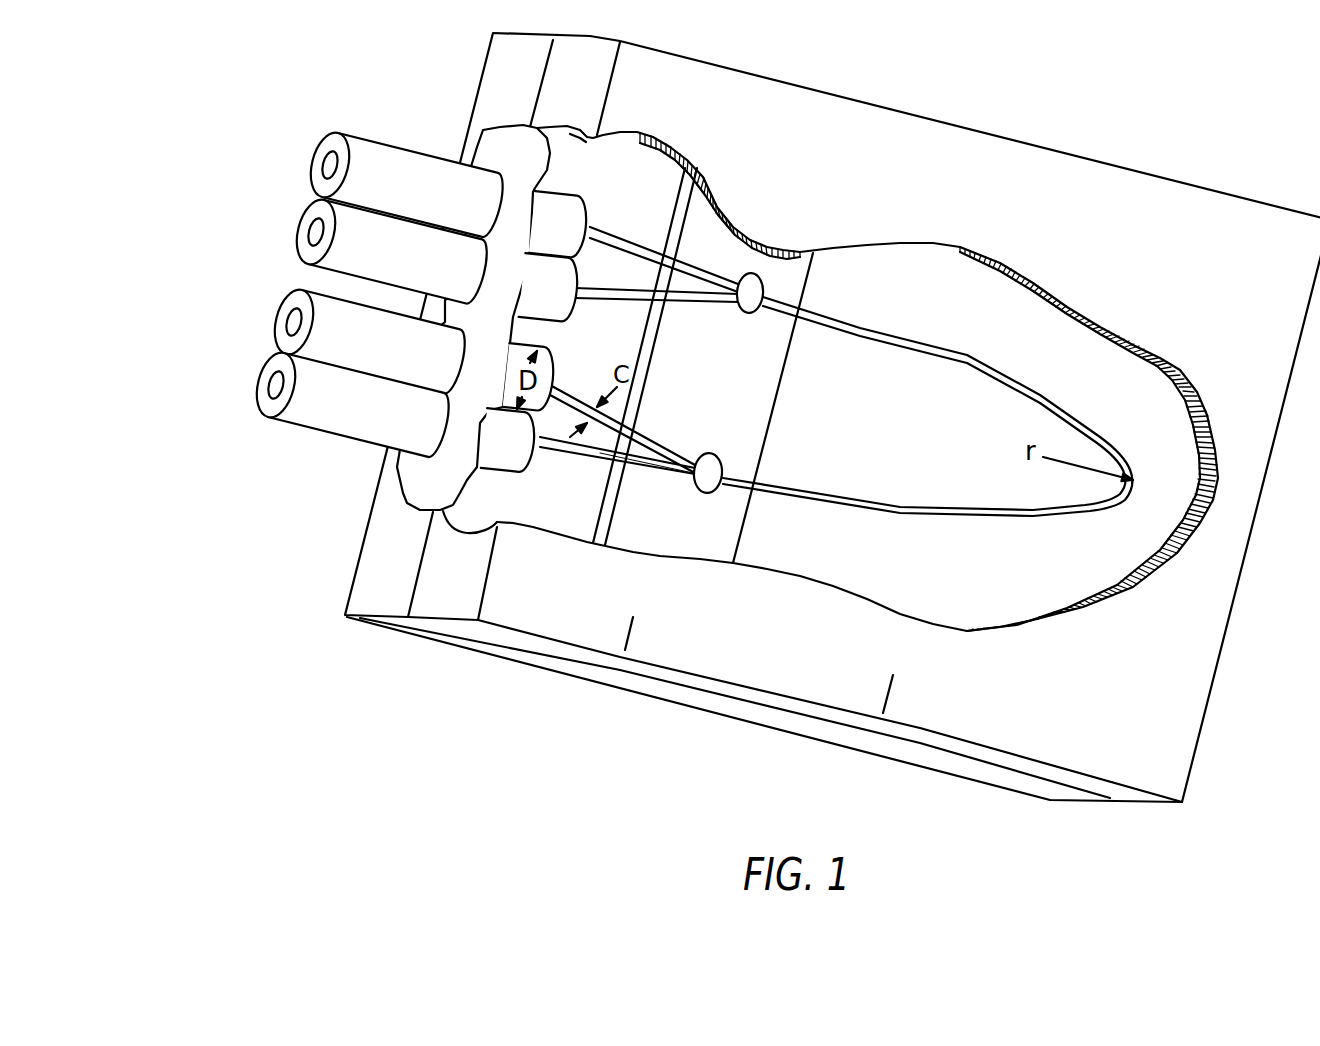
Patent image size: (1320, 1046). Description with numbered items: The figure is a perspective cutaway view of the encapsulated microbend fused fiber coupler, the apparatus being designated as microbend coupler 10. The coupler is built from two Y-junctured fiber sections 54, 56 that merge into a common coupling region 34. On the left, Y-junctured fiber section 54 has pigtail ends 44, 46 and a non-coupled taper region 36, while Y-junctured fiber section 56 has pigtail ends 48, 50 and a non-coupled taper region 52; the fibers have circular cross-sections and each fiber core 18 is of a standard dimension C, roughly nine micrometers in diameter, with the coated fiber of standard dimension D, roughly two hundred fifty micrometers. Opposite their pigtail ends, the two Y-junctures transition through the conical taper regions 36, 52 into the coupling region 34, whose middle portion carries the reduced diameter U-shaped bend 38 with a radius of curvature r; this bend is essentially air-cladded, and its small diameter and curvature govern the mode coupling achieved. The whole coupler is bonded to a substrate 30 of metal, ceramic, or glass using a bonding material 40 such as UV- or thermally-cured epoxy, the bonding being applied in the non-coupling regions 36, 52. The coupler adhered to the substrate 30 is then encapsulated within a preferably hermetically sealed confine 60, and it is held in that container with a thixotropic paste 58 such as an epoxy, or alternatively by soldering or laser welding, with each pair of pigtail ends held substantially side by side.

The microbend coupler 10 is at (1268, 165).
The fiber core 18 is at (313, 233).
The substrate 30 is at (767, 380).
The coupling region 34 is at (957, 363).
The non-coupled taper region 36 is at (1013, 190).
The reduced diameter U-shaped bend 38 is at (1142, 481).
The bonding material 40 is at (763, 289).
The pigtail end 44 is at (327, 147).
The pigtail end 46 is at (313, 205).
The pigtail end 48 is at (280, 338).
The pigtail end 50 is at (267, 397).
The non-coupled taper region 52 is at (887, 690).
The Y-junctured fiber section 54 is at (698, 262).
The Y-junctured fiber section 56 is at (648, 478).
The thixotropic paste 58 is at (412, 492).
The hermetically sealed confine 60 is at (1120, 718).